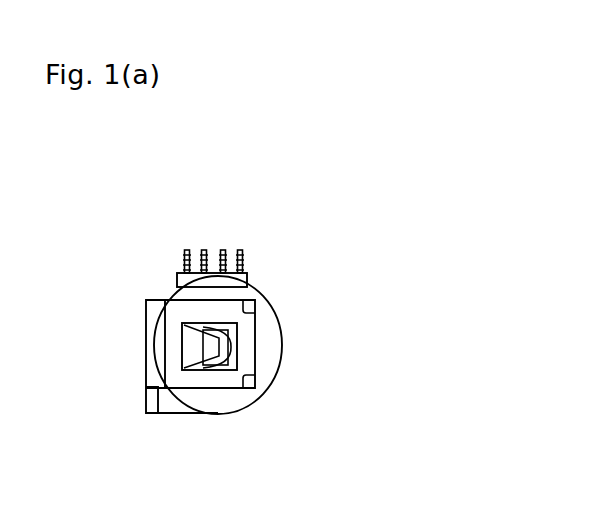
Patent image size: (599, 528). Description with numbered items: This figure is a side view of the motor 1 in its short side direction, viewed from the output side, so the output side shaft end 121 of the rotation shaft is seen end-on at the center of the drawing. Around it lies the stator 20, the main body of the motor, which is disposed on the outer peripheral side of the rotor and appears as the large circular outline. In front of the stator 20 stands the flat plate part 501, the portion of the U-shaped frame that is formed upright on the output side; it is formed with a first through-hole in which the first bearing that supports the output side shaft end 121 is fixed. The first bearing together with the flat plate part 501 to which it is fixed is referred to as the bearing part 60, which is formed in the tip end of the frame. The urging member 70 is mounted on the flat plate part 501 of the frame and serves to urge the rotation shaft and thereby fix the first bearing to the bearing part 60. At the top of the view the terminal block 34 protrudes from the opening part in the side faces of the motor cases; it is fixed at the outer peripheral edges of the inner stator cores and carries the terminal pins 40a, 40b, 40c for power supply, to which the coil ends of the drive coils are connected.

The motor 1 is at (117, 180).
The stator 20 is at (283, 370).
The terminal block 34 is at (248, 278).
The terminal pin 40a is at (187, 250).
The terminal pin 40b is at (204, 250).
The terminal pin 40c is at (223, 250).
The bearing part 60 is at (242, 393).
The urging member 70 is at (165, 298).
The output side shaft end 121 is at (218, 362).
The flat plate part 501 is at (250, 308).